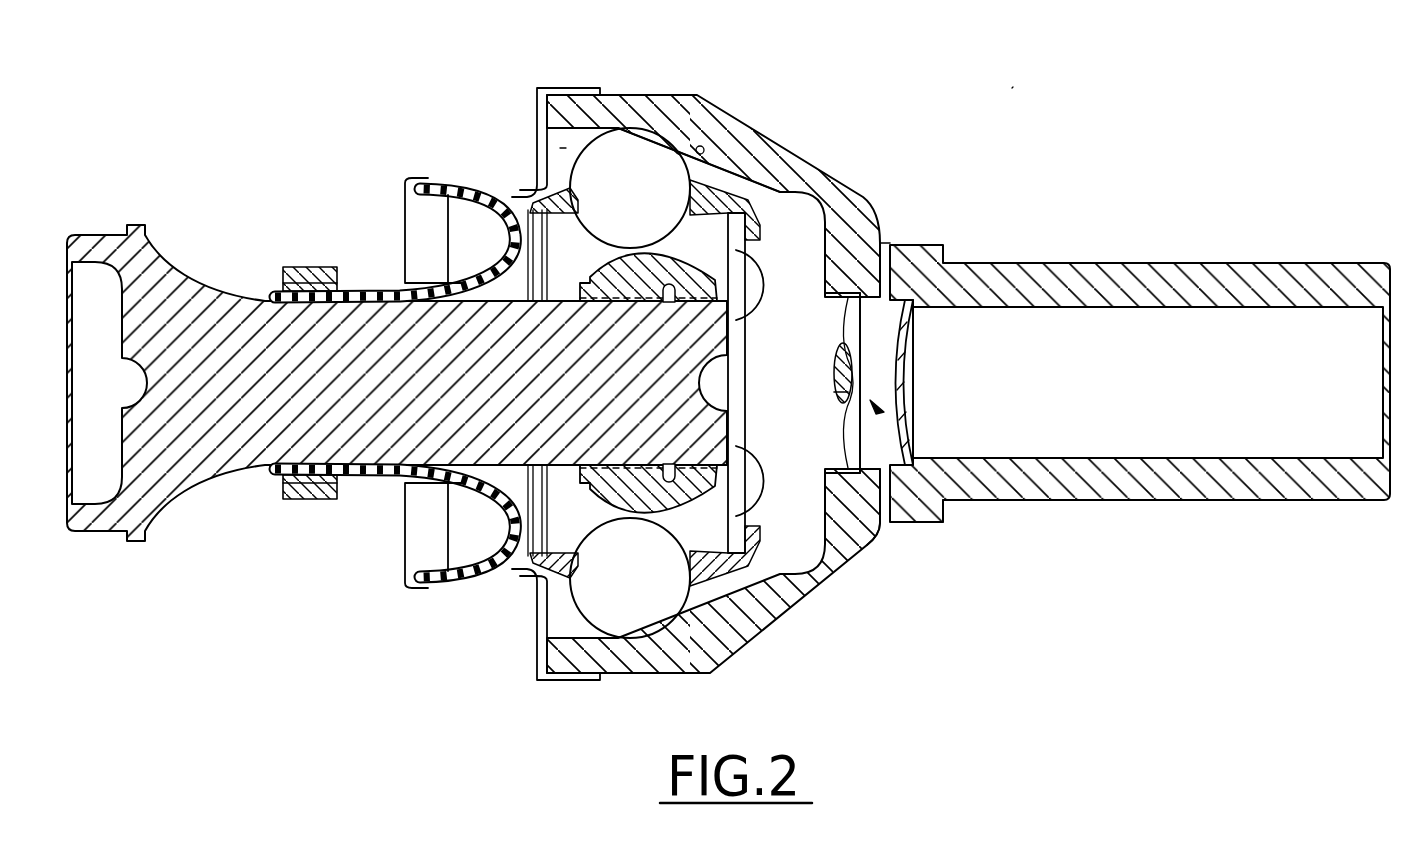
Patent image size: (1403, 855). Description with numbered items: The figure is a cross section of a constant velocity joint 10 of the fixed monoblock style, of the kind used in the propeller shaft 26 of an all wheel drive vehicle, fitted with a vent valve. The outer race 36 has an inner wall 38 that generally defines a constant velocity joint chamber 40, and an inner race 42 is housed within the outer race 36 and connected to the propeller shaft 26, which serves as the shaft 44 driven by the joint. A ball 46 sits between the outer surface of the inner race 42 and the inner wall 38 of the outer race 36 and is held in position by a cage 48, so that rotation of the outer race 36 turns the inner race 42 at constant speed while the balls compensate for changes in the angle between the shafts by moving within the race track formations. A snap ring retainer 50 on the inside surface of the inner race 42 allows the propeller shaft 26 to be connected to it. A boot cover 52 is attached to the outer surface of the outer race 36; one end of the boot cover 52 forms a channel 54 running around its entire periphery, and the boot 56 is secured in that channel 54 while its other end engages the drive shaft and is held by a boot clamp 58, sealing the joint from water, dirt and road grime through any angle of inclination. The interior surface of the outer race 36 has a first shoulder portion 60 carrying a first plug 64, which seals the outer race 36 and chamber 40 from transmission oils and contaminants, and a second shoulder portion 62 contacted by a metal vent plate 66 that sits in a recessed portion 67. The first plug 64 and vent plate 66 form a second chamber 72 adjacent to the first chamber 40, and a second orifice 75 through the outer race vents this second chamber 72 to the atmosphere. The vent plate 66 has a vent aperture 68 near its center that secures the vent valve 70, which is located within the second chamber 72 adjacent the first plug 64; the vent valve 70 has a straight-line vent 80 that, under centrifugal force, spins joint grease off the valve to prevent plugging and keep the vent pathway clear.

The constant velocity joint 10 is at (1012, 88).
The propeller shaft 26 is at (178, 482).
The outer race 36 is at (697, 95).
The inner wall 38 is at (703, 148).
The constant velocity joint chamber 40 is at (568, 149).
The inner race 42 is at (695, 272).
The shaft 44 is at (1212, 265).
The ball 46 is at (633, 138).
The cage 48 is at (748, 190).
The snap ring retainer 50 is at (714, 307).
The boot cover 52 is at (540, 88).
The channel 54 is at (410, 196).
The boot 56 is at (400, 483).
The boot clamp 58 is at (315, 502).
The first shoulder portion 60 is at (948, 506).
The second shoulder portion 62 is at (836, 500).
The first plug 64 is at (906, 398).
The vent plate 66 is at (882, 530).
The recessed portion 67 is at (896, 505).
The vent aperture 68 is at (836, 358).
The vent valve 70 is at (896, 374).
The second chamber 72 is at (893, 432).
The second orifice 75 is at (884, 244).
The straight-line vent 80 is at (832, 381).